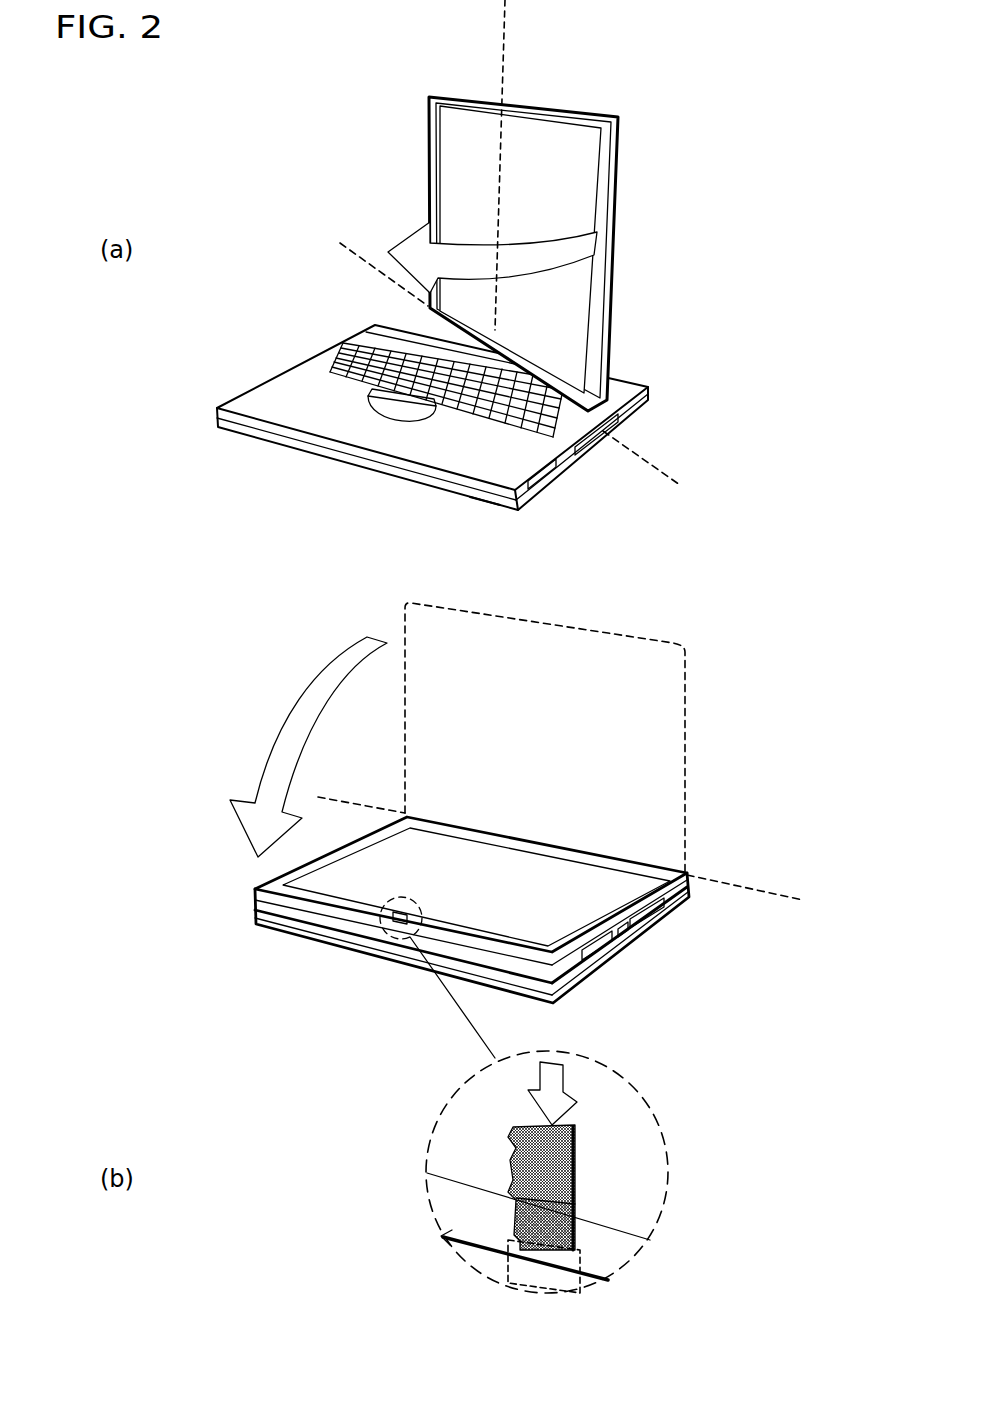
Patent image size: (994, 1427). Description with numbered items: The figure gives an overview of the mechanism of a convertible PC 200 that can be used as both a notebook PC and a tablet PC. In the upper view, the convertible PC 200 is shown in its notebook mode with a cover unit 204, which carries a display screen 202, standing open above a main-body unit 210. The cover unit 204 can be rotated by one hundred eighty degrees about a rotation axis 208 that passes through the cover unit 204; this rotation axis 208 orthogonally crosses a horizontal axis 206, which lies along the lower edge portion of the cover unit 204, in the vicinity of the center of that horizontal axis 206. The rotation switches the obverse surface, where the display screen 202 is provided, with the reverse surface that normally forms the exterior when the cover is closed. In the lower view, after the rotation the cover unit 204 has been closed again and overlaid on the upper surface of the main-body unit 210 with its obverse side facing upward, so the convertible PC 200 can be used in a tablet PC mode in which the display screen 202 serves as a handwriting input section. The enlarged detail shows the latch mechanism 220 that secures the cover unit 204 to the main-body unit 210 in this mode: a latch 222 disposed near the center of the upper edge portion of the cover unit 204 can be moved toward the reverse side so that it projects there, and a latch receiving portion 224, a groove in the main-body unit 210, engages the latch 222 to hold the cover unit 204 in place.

The convertible PC 200 is at (306, 134).
The display screen 202 is at (578, 168).
The cover unit 204 is at (613, 270).
The horizontal axis 206 is at (663, 474).
The rotation axis 208 is at (499, 33).
The main-body unit 210 is at (483, 507).
The latch mechanism 220 is at (668, 1178).
The latch 222 is at (577, 1181).
The latch receiving portion 224 is at (553, 1287).